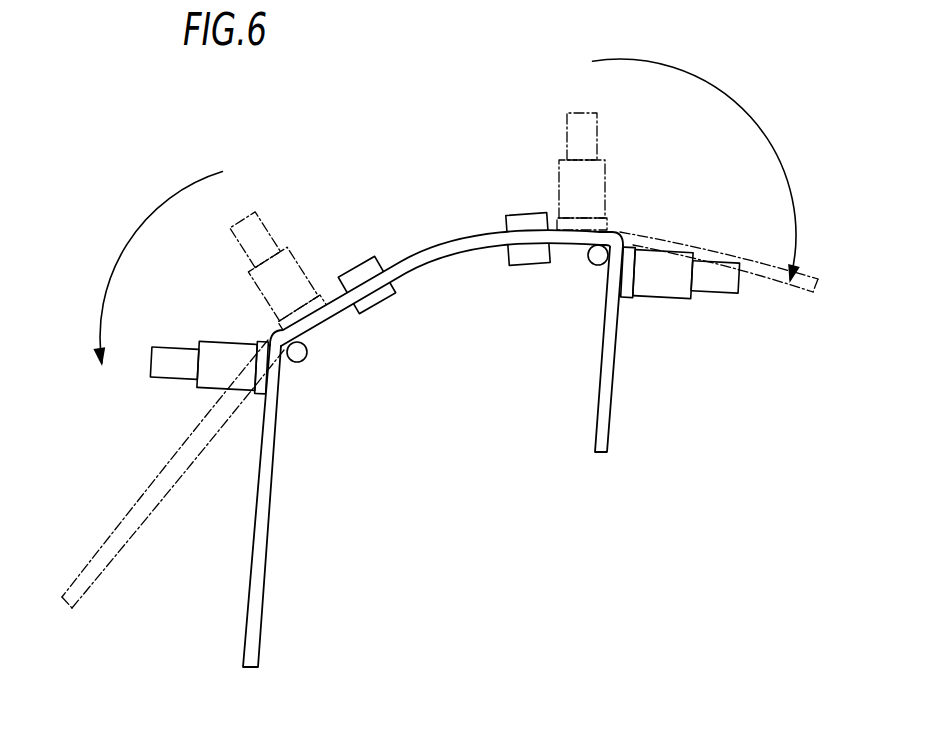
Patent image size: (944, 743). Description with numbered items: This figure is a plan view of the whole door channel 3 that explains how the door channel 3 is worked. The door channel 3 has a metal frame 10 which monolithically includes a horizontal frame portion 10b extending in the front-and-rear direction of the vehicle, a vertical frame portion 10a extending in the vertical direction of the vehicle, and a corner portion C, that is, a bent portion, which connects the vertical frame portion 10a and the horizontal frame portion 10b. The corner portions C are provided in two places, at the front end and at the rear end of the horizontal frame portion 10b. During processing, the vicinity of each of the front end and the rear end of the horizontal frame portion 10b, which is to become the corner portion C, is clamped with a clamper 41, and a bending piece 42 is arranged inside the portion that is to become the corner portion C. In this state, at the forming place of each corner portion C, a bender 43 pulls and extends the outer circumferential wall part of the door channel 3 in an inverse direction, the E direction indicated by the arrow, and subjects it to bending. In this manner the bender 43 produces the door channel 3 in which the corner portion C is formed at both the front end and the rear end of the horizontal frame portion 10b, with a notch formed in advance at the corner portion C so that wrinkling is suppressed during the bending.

The frame 10 is at (440, 385).
The vertical frame portion 10a is at (270, 508).
The horizontal frame portion 10b is at (426, 247).
The door channel 3 is at (438, 280).
The clamper 41 is at (348, 269).
The bending piece 42 is at (304, 359).
The bender 43 is at (167, 370).
The corner portion C is at (272, 338).
The E direction E is at (446, 212).